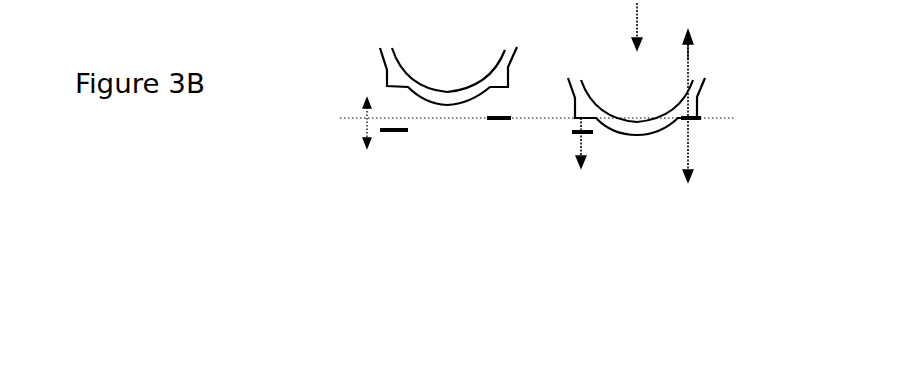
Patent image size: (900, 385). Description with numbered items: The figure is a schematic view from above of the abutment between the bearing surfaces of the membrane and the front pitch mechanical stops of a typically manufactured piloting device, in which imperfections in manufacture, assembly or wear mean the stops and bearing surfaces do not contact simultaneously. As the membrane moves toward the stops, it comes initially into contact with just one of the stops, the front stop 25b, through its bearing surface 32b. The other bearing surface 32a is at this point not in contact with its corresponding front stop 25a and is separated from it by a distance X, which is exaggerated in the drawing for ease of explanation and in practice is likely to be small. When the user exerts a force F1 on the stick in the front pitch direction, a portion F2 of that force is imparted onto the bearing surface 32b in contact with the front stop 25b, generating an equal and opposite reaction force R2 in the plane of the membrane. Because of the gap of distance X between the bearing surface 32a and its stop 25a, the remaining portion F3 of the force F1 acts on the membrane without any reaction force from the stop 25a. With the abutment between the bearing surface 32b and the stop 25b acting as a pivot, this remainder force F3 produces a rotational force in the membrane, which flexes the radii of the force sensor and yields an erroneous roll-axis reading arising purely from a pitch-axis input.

The bearing surface 32a is at (380, 84).
The bearing surface 32b is at (515, 85).
The front stop 25a is at (395, 155).
The front stop 25b is at (494, 148).
The distance X is at (352, 131).
The force F1 is at (640, 39).
The portion of the force F2 is at (691, 128).
The remaining portion of the force F3 is at (583, 157).
The reaction force R2 is at (708, 45).